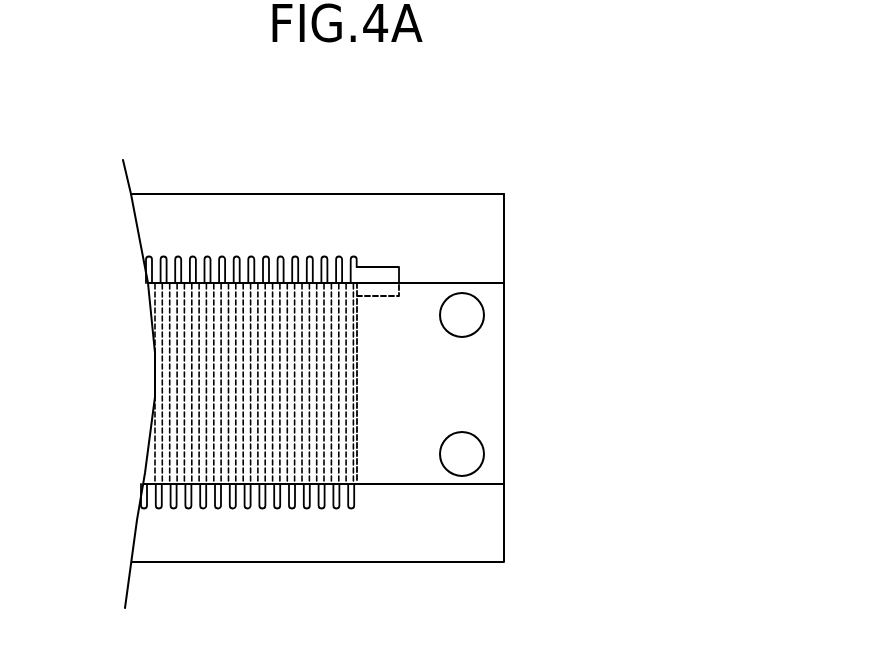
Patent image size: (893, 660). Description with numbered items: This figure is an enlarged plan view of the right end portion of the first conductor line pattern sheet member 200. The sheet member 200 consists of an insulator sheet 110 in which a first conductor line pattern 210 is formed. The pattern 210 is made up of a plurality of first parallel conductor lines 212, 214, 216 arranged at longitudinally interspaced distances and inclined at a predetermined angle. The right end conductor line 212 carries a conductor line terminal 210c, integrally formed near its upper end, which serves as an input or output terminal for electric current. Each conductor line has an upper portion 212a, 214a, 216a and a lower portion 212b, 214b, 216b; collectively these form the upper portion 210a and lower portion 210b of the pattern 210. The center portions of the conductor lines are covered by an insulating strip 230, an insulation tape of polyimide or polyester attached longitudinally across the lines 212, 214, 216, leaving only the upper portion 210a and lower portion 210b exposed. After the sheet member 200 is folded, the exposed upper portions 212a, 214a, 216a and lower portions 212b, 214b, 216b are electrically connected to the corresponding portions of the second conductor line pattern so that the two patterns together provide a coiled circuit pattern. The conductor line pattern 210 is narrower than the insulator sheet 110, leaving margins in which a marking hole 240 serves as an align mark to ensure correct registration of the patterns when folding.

The first conductor line pattern sheet member 200 is at (152, 172).
The insulator sheet 110 is at (210, 204).
The first conductor line pattern 210 is at (203, 368).
The upper portion of the first conductor line pattern 210a is at (127, 258).
The lower portion of the first conductor line pattern 210b is at (127, 483).
The conductor line terminal 210c is at (402, 260).
The first parallel conductor line 212 is at (352, 416).
The upper portion of conductor line 212a is at (353, 257).
The lower portion of conductor line 212b is at (358, 505).
The first parallel conductor line 214 is at (335, 394).
The upper portion of conductor line 214a is at (345, 257).
The lower portion of conductor line 214b is at (352, 508).
The first parallel conductor line 216 is at (325, 376).
The upper portion of conductor line 216a is at (327, 257).
The lower portion of conductor line 216b is at (323, 505).
The insulating strip 230 is at (430, 378).
The marking hole 240 is at (483, 438).